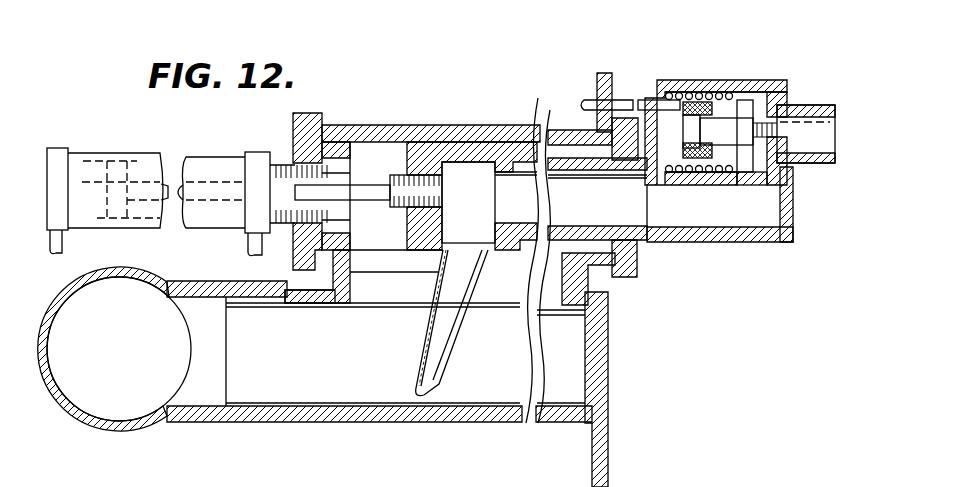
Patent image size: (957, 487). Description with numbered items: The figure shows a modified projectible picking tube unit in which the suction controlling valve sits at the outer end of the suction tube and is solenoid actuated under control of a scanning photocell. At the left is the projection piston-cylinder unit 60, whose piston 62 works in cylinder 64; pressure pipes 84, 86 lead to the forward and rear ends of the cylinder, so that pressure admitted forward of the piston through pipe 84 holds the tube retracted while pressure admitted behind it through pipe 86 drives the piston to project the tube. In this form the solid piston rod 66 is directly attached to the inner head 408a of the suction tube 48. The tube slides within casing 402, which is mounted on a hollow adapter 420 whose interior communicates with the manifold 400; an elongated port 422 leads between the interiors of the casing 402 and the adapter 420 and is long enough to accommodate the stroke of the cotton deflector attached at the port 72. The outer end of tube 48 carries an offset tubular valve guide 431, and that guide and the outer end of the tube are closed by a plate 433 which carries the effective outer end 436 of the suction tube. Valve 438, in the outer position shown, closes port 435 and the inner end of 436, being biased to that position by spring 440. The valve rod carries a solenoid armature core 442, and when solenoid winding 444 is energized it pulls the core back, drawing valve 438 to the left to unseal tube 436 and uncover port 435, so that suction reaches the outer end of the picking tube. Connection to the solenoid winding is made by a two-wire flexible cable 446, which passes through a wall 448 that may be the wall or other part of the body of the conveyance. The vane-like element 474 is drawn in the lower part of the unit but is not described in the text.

The piston 62 is at (121, 164).
The cylinder 64 is at (190, 161).
The projection piston-cylinder unit 60 is at (234, 157).
The pressure pipe 86 is at (63, 247).
The pressure pipe 84 is at (247, 244).
The piston rod 66 is at (367, 184).
The casing 402 is at (466, 135).
The inner head 408a is at (438, 181).
The port 72 is at (474, 236).
The blade 474 is at (450, 332).
The elongated port 422 is at (513, 268).
The suction tube 48 is at (609, 222).
The manifold 400 is at (141, 349).
The hollow adapter 420 is at (462, 428).
The wall 448 is at (612, 86).
The two-wire flexible cable 446 is at (580, 98).
The spring 440 is at (676, 92).
The solenoid winding 444 is at (700, 102).
The offset tubular valve guide 431 is at (736, 78).
The solenoid armature core 442 is at (741, 125).
The valve 438 is at (776, 86).
The effective outer end of the suction tube 436 is at (802, 165).
The port 435 is at (751, 186).
The plate 433 is at (810, 212).